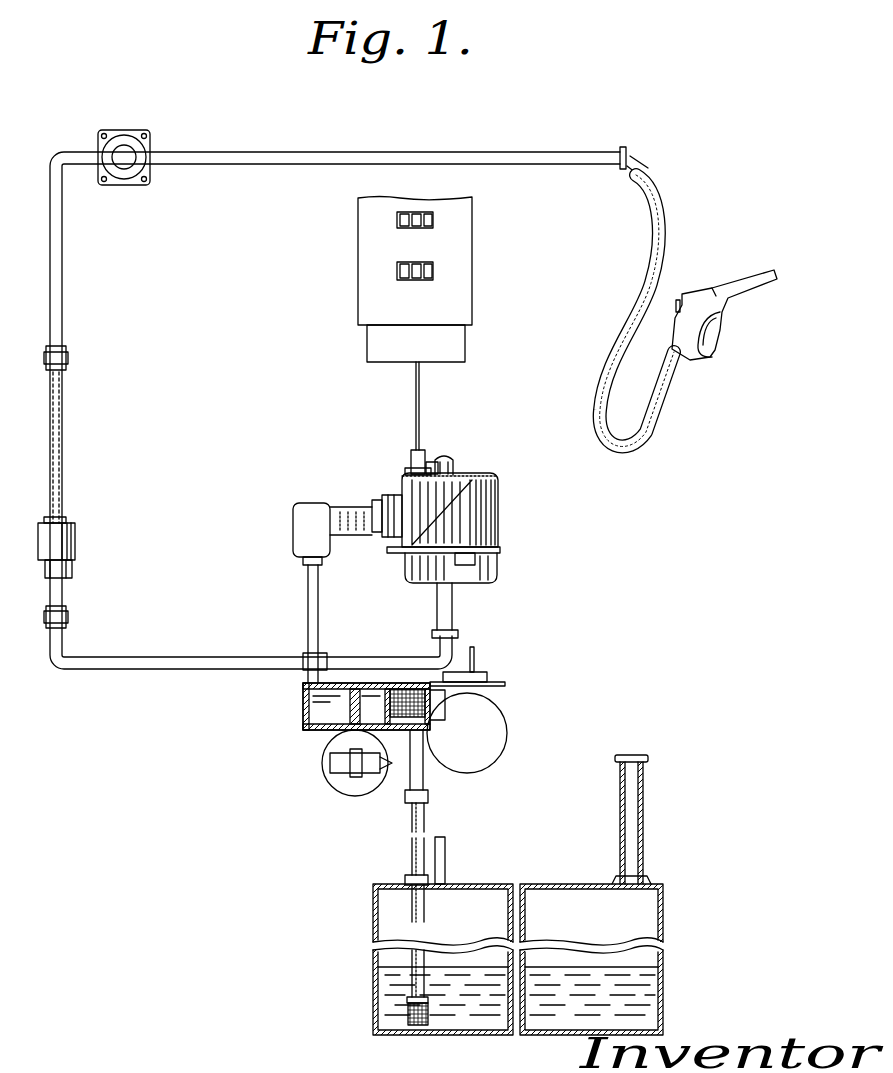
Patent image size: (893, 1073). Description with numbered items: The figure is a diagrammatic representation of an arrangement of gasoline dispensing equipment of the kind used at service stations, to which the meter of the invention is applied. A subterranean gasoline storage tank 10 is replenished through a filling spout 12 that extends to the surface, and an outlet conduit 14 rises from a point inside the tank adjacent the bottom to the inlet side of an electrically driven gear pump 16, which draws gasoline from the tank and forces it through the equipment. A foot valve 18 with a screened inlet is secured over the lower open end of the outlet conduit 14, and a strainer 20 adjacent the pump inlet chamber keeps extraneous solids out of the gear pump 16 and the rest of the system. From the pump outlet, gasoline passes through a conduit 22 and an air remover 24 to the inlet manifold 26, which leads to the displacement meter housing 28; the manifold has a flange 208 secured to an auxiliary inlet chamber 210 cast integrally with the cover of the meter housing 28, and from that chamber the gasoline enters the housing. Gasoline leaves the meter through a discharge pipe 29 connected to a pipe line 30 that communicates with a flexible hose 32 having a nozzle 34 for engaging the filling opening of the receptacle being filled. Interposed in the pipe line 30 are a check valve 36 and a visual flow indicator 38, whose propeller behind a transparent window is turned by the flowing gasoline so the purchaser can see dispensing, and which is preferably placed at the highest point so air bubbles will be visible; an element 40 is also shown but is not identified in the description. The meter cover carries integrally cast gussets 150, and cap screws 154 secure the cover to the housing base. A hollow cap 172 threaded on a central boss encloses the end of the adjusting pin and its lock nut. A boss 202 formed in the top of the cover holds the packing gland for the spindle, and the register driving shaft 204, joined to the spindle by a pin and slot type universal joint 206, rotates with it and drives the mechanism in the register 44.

The subterranean gasoline storage tank 10 is at (665, 926).
The filling spout 12 is at (645, 821).
The outlet conduit 14 is at (425, 822).
The electrically driven gear pump 16 is at (362, 790).
The foot valve 18 is at (410, 1012).
The strainer 20 is at (407, 740).
The conduit 22 is at (308, 610).
The air remover 24 is at (296, 536).
The inlet manifold 26 is at (352, 508).
The displacement meter housing 28 is at (457, 531).
The discharge pipe 29 is at (452, 605).
The pipe line 30 is at (297, 152).
The flexible hose 32 is at (622, 305).
The nozzle 34 is at (730, 305).
The check valve 36 is at (75, 548).
The visual flow indicator 38 is at (128, 144).
The nozzle trigger 40 is at (718, 330).
The register 44 is at (472, 274).
The gussets 150 is at (498, 500).
The cap screws 154 is at (500, 550).
The hollow cap 172 is at (455, 459).
The boss 202 is at (433, 462).
The register driving shaft 204 is at (420, 405).
The pin and slot type universal joint 206 is at (424, 450).
The flange 208 is at (380, 498).
The auxiliary inlet chamber 210 is at (392, 492).